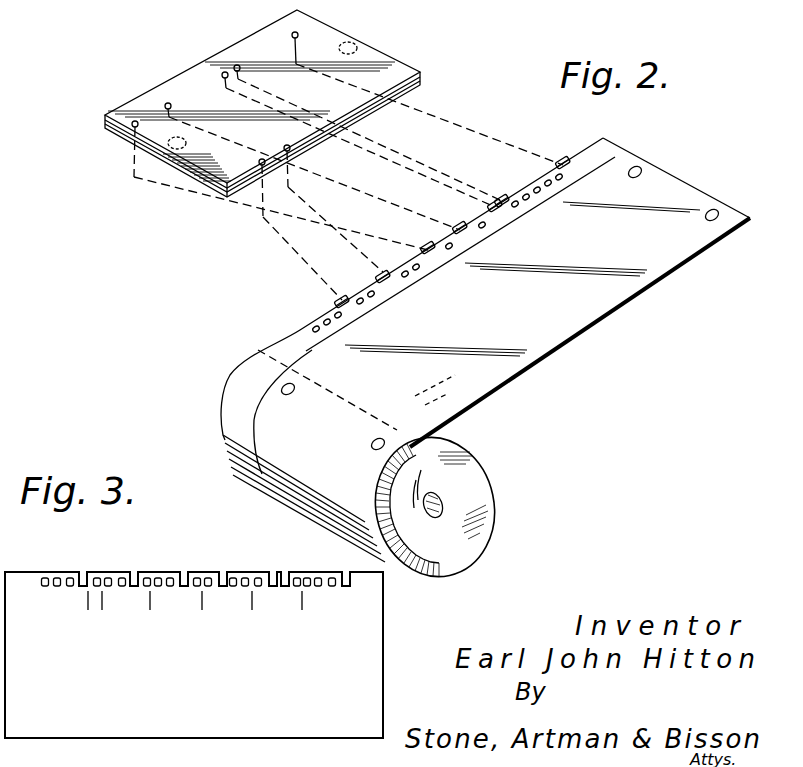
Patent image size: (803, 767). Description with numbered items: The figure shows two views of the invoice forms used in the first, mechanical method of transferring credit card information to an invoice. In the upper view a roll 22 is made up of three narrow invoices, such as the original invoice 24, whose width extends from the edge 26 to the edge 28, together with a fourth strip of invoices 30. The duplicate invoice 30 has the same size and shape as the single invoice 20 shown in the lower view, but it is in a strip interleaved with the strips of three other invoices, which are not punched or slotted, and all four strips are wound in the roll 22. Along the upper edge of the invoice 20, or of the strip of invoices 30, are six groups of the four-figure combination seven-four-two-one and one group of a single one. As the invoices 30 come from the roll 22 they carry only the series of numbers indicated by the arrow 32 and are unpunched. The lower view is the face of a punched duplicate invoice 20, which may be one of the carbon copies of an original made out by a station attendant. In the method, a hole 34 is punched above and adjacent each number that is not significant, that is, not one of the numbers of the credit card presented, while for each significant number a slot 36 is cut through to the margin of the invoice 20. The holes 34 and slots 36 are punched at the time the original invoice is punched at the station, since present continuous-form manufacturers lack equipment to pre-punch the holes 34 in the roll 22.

In FIG. 3, the invoice 20 is at (380, 643).
In FIG. 2, the roll 22 is at (490, 483).
In FIG. 2, the original invoice 24 is at (557, 333).
In FIG. 2, the edge 26 is at (254, 418).
In FIG. 2, the edge 28 is at (383, 477).
In FIG. 2, the strip of invoices 30 is at (287, 337).
In FIG. 2, the arrow 32 is at (322, 349).
In FIG. 2, the hole 34 is at (315, 318).
In FIG. 3, the hole 34 is at (45, 578).
In FIG. 3, the slot 36 is at (83, 574).